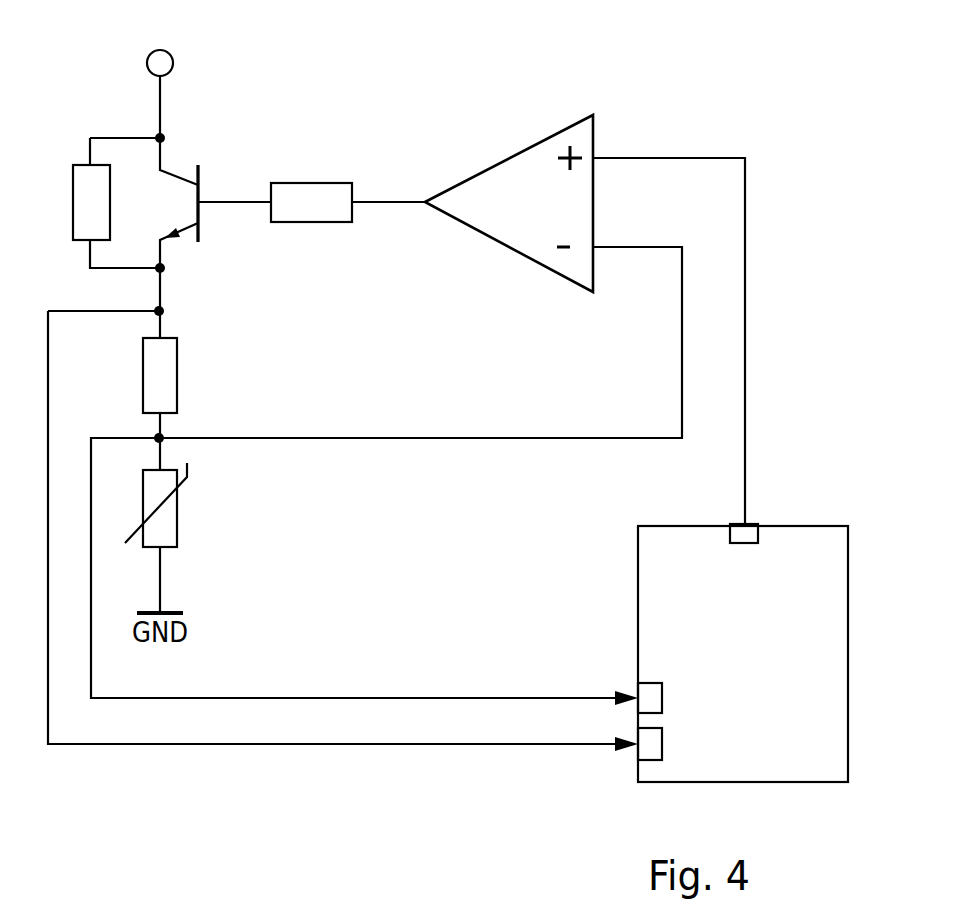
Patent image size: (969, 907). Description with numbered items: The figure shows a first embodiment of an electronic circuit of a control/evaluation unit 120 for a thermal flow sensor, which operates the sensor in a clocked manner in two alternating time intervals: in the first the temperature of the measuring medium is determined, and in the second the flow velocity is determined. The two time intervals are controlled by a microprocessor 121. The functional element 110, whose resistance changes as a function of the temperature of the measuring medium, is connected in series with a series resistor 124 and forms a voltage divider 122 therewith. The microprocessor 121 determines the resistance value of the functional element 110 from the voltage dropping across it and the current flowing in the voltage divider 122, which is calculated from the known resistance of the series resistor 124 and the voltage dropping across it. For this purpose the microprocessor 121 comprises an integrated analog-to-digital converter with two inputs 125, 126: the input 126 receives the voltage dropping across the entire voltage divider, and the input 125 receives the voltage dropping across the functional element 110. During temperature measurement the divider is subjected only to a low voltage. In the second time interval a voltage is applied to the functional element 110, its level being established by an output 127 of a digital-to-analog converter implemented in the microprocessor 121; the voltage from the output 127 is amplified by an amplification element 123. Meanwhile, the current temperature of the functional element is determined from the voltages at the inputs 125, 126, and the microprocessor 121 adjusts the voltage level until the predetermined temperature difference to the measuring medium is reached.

The functional element 110 is at (165, 510).
The control/evaluation unit 120 is at (440, 117).
The microprocessor 121 is at (778, 669).
The voltage divider 122 is at (227, 338).
The amplification element 123 is at (590, 302).
The series resistor 124 is at (167, 395).
The input 125 is at (643, 690).
The input 126 is at (648, 750).
The output 127 is at (752, 530).